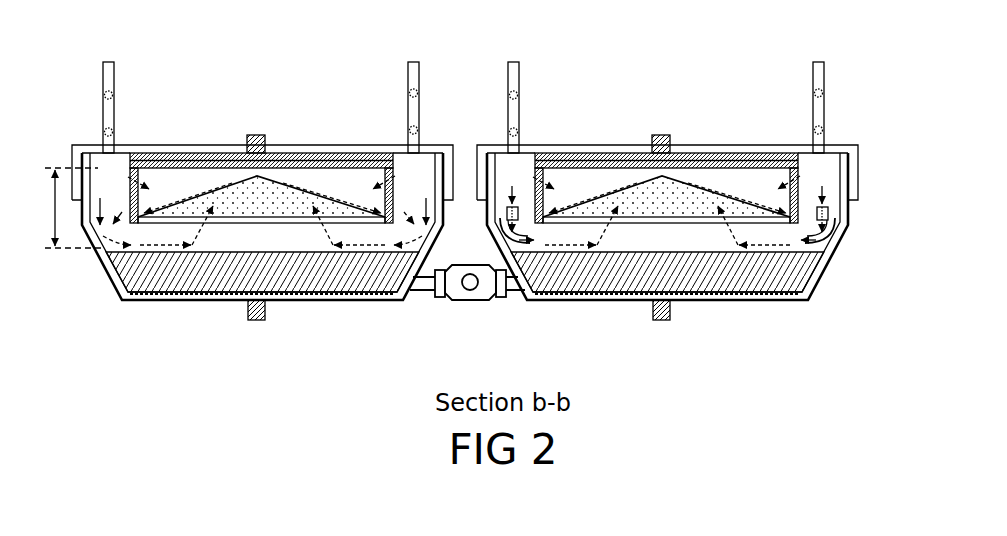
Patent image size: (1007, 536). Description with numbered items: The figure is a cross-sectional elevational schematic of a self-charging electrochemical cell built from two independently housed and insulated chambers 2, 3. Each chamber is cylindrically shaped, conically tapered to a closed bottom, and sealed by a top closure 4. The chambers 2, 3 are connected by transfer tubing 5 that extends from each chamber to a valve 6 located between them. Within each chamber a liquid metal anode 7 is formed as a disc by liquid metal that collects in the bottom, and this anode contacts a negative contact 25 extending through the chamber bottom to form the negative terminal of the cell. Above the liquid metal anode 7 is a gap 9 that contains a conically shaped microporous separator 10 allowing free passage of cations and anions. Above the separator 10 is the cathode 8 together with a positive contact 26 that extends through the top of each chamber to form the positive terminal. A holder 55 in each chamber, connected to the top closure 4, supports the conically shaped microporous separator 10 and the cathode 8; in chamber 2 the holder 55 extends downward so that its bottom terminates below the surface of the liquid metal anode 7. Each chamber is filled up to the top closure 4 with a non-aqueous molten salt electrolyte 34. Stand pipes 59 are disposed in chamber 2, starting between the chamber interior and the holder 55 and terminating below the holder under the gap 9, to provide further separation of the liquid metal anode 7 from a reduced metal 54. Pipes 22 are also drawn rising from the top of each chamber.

The chamber 2 is at (596, 303).
The chamber 3 is at (199, 304).
The top closure 4 is at (127, 144).
The transfer tubing 5 is at (428, 294).
The valve 6 is at (464, 303).
The liquid metal anode 7 is at (352, 295).
The cathode 8 is at (288, 159).
The gap 9 is at (73, 208).
The conically shaped microporous separator 10 is at (464, 196).
The inlet pipe 22 is at (115, 73).
The negative contact 25 is at (257, 323).
The positive contact 26 is at (257, 133).
The non-aqueous molten salt electrolyte 34 is at (126, 180).
The reduced metal 54 is at (450, 208).
The holder 55 is at (179, 151).
The stand pipes 59 is at (504, 212).